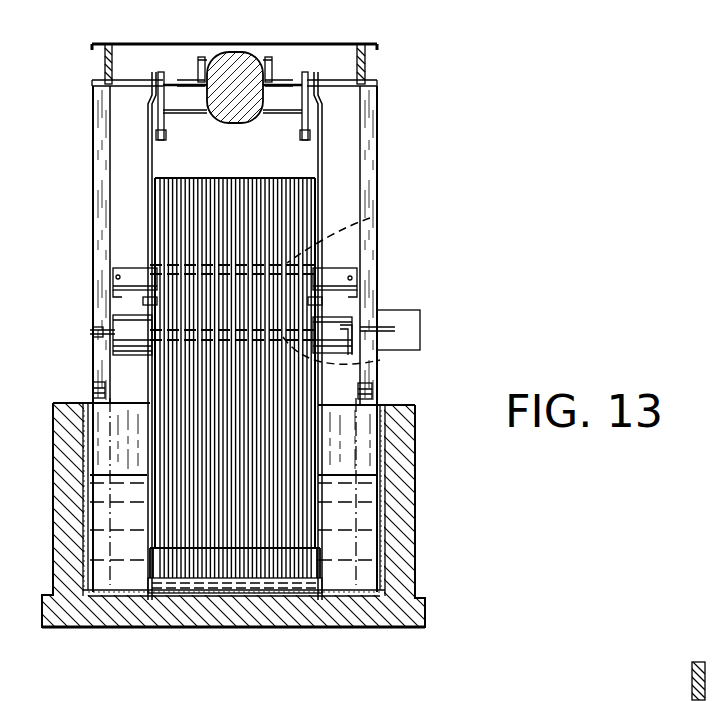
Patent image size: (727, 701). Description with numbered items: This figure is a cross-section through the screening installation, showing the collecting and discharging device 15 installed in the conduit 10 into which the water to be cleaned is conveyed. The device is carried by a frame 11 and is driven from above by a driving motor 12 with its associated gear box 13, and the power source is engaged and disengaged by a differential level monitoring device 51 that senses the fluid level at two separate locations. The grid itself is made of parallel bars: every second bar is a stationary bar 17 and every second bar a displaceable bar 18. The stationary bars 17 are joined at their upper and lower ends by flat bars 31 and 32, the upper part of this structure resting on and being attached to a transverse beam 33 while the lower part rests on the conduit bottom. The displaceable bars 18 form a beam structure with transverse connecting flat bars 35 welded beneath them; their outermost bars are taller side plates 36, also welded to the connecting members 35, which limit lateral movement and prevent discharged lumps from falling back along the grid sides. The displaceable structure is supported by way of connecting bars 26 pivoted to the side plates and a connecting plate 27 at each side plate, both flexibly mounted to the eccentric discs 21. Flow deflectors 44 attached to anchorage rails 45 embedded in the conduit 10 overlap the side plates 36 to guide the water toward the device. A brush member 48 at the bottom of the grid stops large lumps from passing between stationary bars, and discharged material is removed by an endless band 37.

The conduit 10 is at (68, 466).
The frame 11 is at (368, 115).
The driving motor 12 is at (240, 52).
The gear box 13 is at (228, 72).
The collecting and discharging device 15 is at (243, 465).
The stationary bar 17 is at (293, 557).
The displaceable bar 18 is at (283, 503).
The eccentric disc 21 is at (165, 131).
The connecting bar 26 is at (323, 173).
The connecting plate 27 is at (156, 72).
The flat bar 31 is at (340, 273).
The flat bar 32 is at (207, 606).
The transverse beam 33 is at (112, 296).
The flat bar 35 is at (370, 218).
The side plate 36 is at (140, 172).
The endless band 37 is at (135, 350).
The flow deflector 44 is at (120, 445).
The anchorage rail 45 is at (84, 418).
The brush member 48 is at (240, 606).
The differential level monitoring device 51 is at (403, 336).